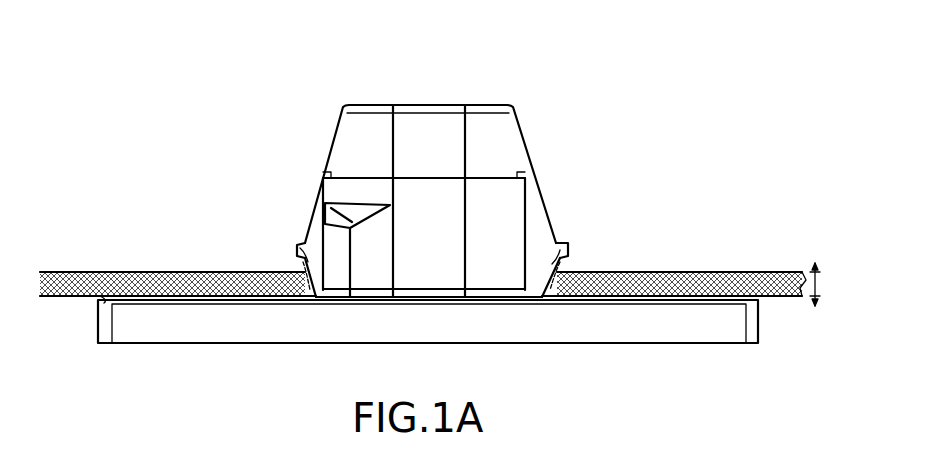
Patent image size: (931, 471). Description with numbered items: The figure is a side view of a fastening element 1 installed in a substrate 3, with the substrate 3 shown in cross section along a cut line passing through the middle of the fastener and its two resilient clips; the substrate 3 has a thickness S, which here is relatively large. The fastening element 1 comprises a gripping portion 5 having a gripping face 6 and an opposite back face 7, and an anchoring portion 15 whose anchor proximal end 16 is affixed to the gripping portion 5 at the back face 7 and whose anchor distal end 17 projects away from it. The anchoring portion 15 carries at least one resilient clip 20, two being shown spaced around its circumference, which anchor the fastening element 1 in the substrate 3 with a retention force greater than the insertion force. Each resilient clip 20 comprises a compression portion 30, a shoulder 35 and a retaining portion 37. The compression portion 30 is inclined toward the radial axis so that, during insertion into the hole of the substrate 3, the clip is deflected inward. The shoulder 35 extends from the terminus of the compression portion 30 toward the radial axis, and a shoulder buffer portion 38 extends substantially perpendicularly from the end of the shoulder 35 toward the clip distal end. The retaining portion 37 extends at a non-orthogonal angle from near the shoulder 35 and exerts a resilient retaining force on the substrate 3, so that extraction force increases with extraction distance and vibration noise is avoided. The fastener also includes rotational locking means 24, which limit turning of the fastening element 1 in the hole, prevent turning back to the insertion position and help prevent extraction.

The fastening element 1 is at (512, 60).
The substrate 3 is at (100, 270).
The gripping portion 5 is at (590, 346).
The gripping face 6 is at (182, 343).
The back face 7 is at (100, 297).
The anchoring portion 15 is at (530, 140).
The anchor proximal end 16 is at (318, 298).
The anchor distal end 17 is at (368, 104).
The resilient clip 20 is at (312, 220).
The rotational locking means 24 is at (333, 210).
The compression portion 30 is at (312, 210).
The shoulder 35 is at (300, 247).
The retaining portion 37 is at (292, 283).
The shoulder buffer portion 38 is at (298, 250).
The thickness S is at (822, 284).